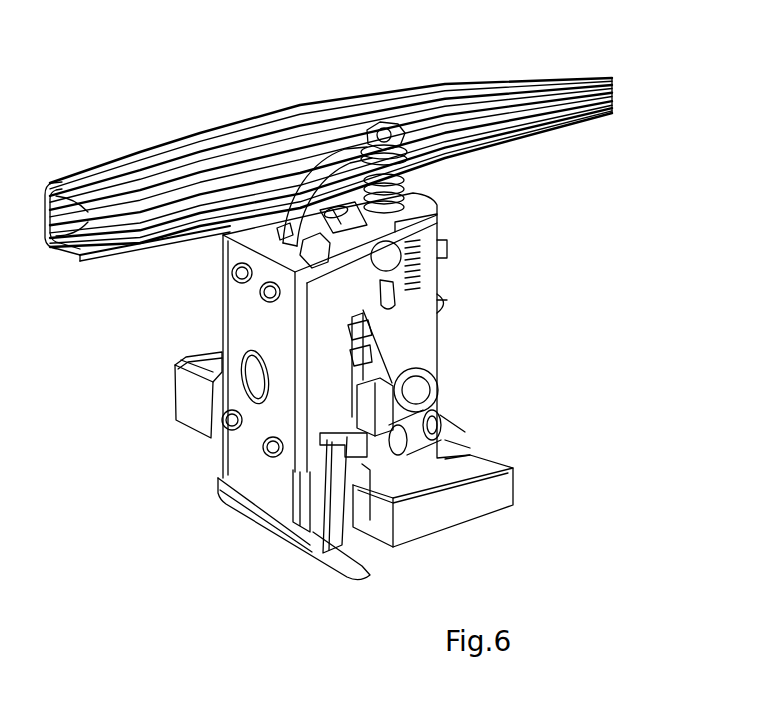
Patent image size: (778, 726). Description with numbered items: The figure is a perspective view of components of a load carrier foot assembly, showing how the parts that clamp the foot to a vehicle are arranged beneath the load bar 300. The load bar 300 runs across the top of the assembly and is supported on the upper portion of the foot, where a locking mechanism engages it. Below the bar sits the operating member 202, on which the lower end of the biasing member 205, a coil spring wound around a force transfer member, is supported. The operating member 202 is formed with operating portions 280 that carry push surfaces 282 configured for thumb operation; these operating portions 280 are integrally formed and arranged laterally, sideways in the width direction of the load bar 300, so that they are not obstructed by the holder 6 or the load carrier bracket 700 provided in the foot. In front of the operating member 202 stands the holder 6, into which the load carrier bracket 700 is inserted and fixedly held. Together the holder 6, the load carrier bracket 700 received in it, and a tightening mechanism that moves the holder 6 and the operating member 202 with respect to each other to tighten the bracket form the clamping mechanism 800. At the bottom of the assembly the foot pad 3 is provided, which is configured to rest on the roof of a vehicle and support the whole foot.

The load bar 300 is at (233, 113).
The holder 6 is at (215, 306).
The operating member 202 is at (447, 332).
The biasing member 205 is at (405, 193).
The operating portion 280 is at (395, 377).
The push surface 282 is at (365, 407).
The foot pad 3 is at (538, 496).
The clamping mechanism 800 is at (184, 460).
The load carrier bracket 700 is at (251, 546).